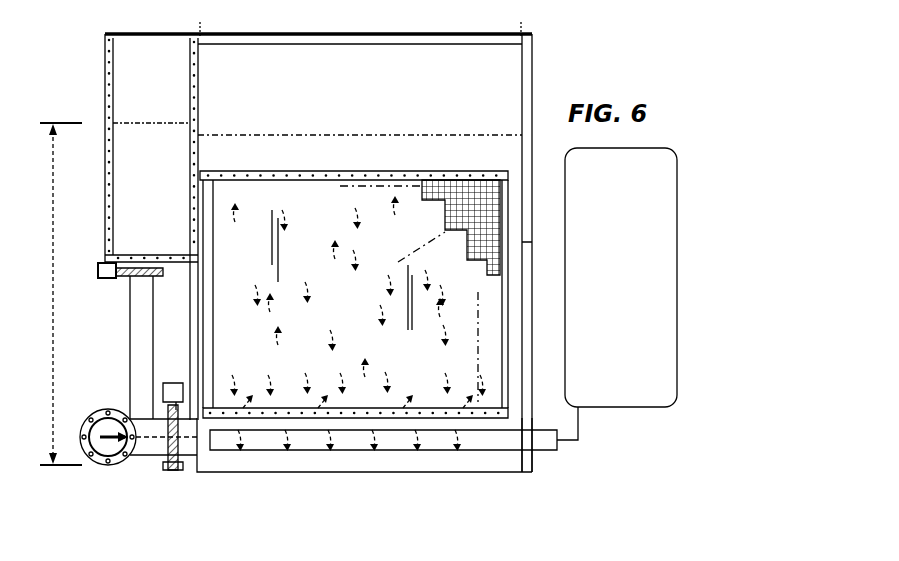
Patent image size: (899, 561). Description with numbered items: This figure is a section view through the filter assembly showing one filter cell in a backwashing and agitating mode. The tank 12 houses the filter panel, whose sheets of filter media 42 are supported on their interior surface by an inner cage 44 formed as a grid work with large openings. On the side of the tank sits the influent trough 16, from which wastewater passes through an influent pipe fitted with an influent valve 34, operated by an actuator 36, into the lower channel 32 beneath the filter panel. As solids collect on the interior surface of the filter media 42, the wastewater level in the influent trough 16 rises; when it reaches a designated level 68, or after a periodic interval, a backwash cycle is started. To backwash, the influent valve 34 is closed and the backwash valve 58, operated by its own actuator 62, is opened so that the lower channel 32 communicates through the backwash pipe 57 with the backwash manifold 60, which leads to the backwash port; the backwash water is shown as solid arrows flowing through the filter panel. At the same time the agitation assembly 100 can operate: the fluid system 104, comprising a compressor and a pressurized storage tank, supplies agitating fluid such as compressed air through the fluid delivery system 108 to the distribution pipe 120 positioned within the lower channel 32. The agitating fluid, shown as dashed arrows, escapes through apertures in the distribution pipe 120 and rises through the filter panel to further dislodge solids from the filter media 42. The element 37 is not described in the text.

The tank 12 is at (267, 35).
The influent trough 16 is at (152, 34).
The filter media 42 is at (367, 309).
The inner cage 44 is at (457, 178).
The actuator 36 is at (104, 279).
The influent valve 34 is at (160, 278).
The backwash manifold 60 is at (102, 410).
The backwash pipe 57 is at (148, 456).
The backwash valve 58 is at (173, 470).
The actuator 62 is at (175, 383).
The trough 37 is at (384, 472).
The distribution pipe 120 is at (488, 445).
The lower channel 32 is at (512, 472).
The fluid system 104 is at (657, 213).
The fluid delivery system 108 is at (583, 437).
The agitation assembly 100 is at (750, 322).
The designated level 68 is at (61, 294).